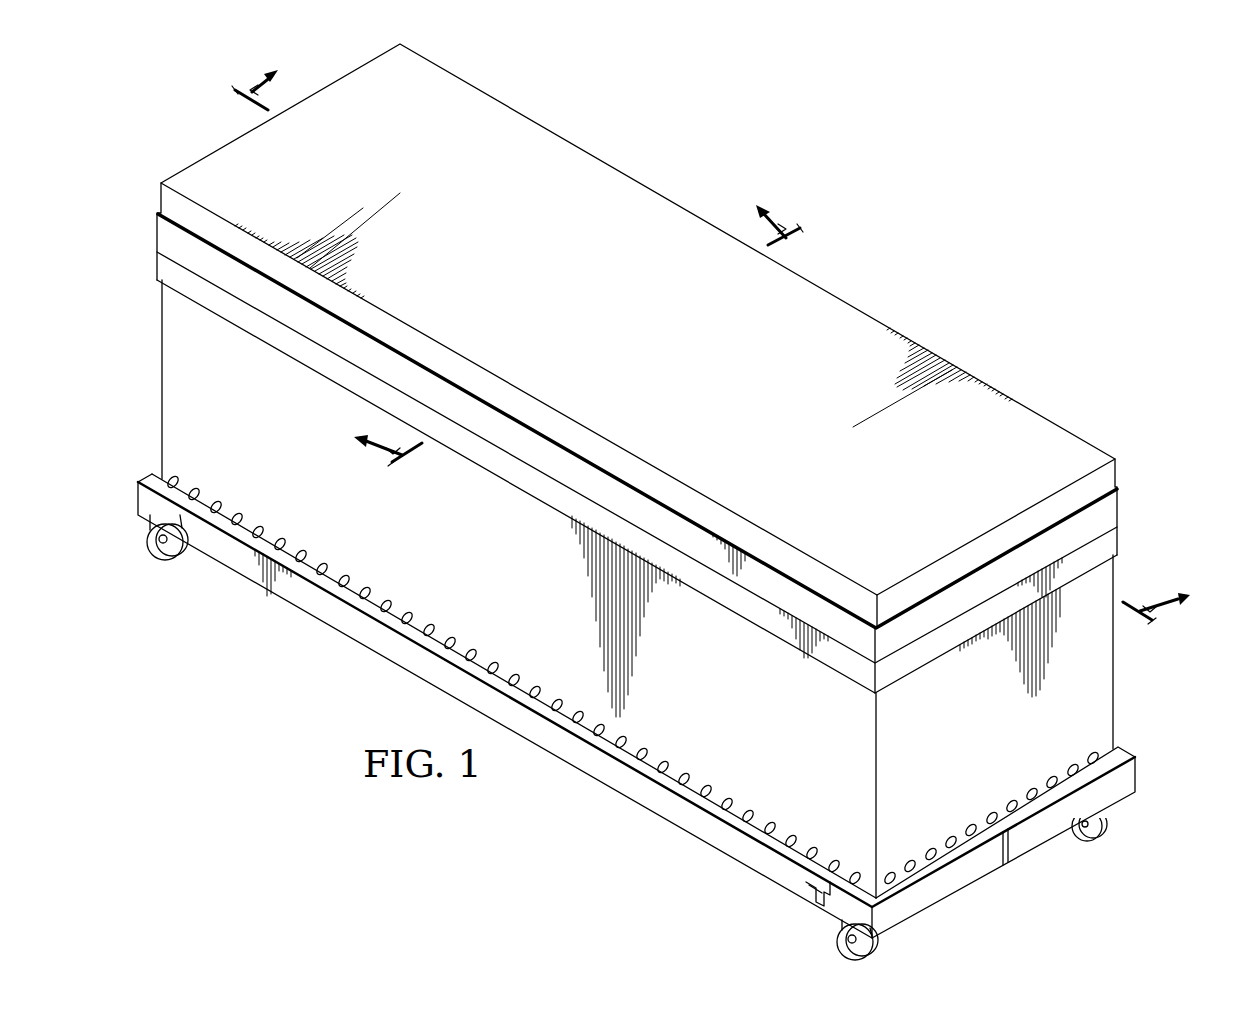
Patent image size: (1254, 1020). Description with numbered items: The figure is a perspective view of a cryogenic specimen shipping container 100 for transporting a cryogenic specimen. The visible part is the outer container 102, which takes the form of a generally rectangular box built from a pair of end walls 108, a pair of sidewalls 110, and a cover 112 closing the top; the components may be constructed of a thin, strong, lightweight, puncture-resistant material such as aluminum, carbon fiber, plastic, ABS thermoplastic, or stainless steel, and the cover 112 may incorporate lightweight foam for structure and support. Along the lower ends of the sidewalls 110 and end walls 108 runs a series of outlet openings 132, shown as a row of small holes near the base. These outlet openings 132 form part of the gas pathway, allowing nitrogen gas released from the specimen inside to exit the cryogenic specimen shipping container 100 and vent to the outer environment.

The cryogenic specimen shipping container 100 is at (912, 200).
The outer container 102 is at (1142, 710).
The end walls 108 is at (1103, 673).
The sidewalls 110 is at (170, 382).
The cover 112 is at (1027, 423).
The outlet openings 132 is at (367, 600).